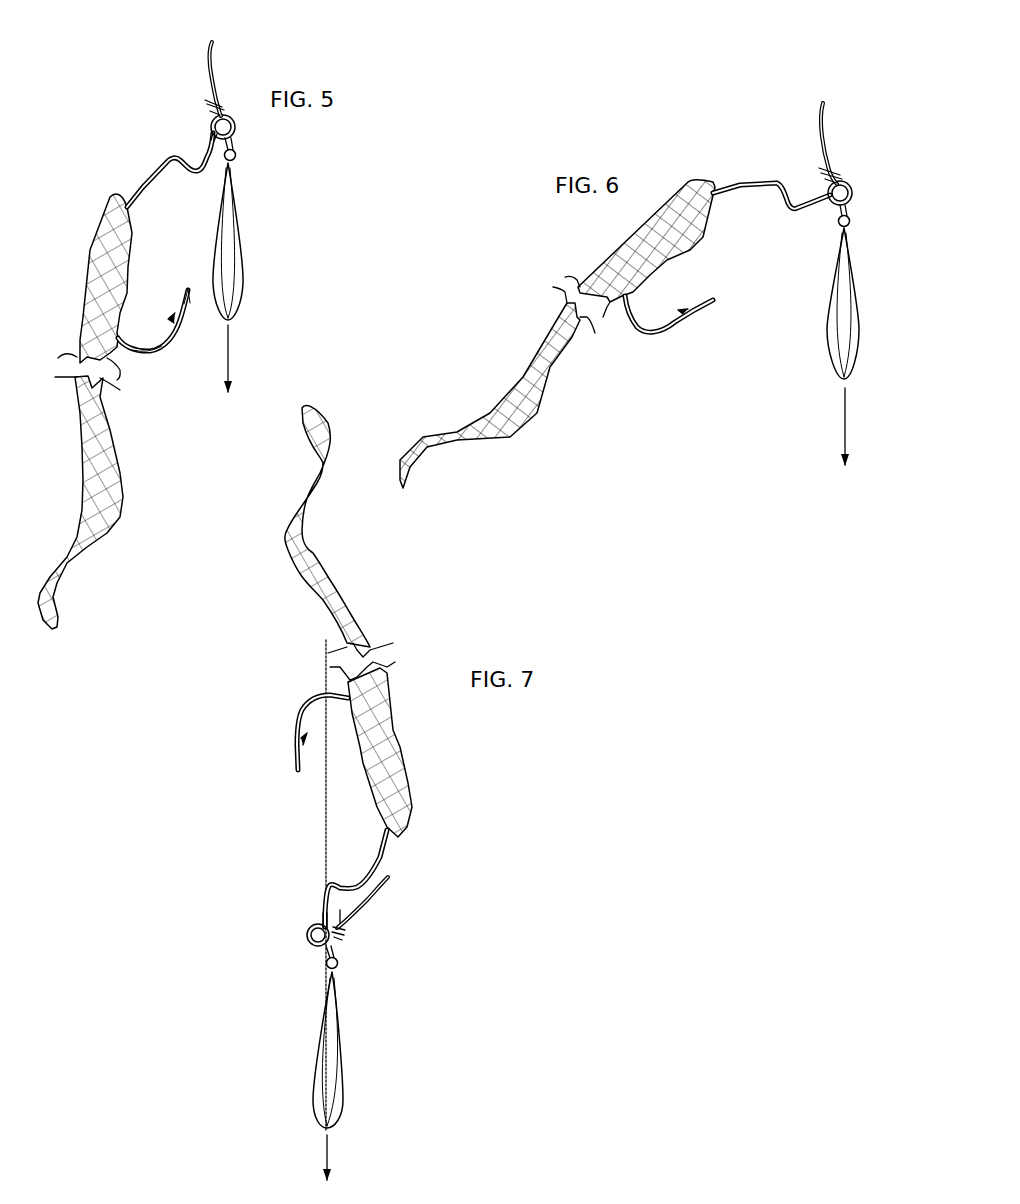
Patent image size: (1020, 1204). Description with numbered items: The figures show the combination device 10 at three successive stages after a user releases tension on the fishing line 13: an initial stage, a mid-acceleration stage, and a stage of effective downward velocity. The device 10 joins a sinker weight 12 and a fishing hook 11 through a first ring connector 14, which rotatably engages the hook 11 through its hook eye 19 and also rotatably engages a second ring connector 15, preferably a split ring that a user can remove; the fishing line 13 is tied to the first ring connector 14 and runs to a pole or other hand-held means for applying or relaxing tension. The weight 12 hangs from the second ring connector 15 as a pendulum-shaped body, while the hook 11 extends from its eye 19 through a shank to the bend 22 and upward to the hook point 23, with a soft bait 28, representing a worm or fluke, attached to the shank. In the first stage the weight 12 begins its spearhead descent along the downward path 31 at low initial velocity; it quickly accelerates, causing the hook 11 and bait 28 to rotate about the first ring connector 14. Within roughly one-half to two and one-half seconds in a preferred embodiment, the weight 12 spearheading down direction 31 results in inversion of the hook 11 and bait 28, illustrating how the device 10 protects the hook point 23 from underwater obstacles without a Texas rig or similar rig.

In FIG. 5, the combination device 10 is at (190, 98).
In FIG. 6, the combination device 10 is at (757, 162).
In FIG. 7, the combination device 10 is at (413, 860).
In FIG. 5, the fishing hook 11 is at (162, 168).
In FIG. 6, the fishing hook 11 is at (740, 182).
In FIG. 7, the fishing hook 11 is at (300, 705).
In FIG. 5, the sinker weight 12 is at (240, 220).
In FIG. 6, the sinker weight 12 is at (837, 320).
In FIG. 7, the sinker weight 12 is at (340, 1047).
In FIG. 5, the fishing line 13 is at (203, 63).
In FIG. 6, the fishing line 13 is at (817, 135).
In FIG. 7, the fishing line 13 is at (365, 903).
In FIG. 5, the first ring connector 14 is at (229, 113).
In FIG. 6, the first ring connector 14 is at (847, 182).
In FIG. 7, the first ring connector 14 is at (310, 930).
In FIG. 5, the second ring connector 15 is at (236, 150).
In FIG. 6, the second ring connector 15 is at (844, 216).
In FIG. 7, the second ring connector 15 is at (325, 953).
In FIG. 5, the hook eye 19 is at (213, 137).
In FIG. 7, the hook eye 19 is at (318, 920).
In FIG. 5, the bend 22 is at (145, 360).
In FIG. 5, the hook point 23 is at (188, 292).
In FIG. 5, the soft bait 28 is at (98, 248).
In FIG. 6, the soft bait 28 is at (557, 334).
In FIG. 7, the soft bait 28 is at (415, 760).
In FIG. 5, the downward path 31 is at (246, 358).
In FIG. 6, the downward path 31 is at (825, 426).
In FIG. 7, the downward path 31 is at (346, 1157).